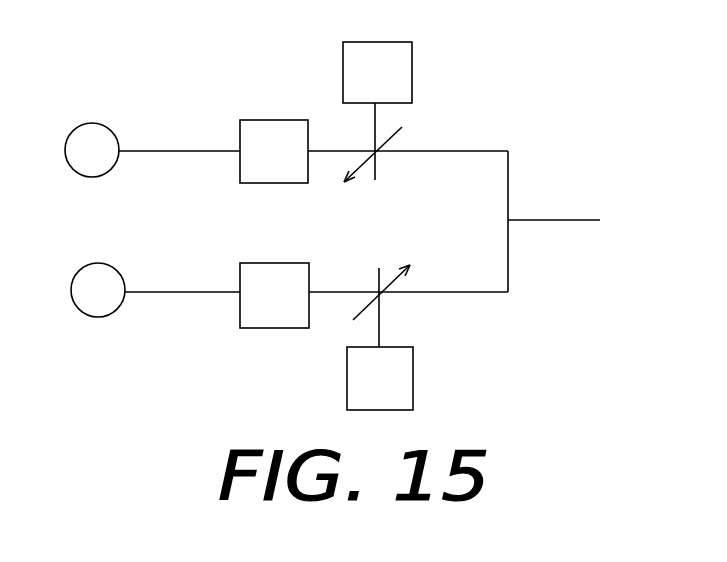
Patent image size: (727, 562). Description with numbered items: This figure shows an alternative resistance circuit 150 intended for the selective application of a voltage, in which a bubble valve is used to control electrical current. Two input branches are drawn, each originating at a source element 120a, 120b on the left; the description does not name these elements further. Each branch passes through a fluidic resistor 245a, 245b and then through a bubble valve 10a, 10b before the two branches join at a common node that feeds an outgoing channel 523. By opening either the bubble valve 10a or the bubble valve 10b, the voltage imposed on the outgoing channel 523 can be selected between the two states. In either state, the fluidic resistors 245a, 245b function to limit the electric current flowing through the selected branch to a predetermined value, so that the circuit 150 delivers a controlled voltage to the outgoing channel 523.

The light source 120b is at (92, 128).
The light source 120a is at (94, 270).
The fluidic resistor 245b is at (274, 151).
The fluidic resistor 245a is at (274, 295).
The bubble valve 10b is at (377, 112).
The bubble valve 10a is at (380, 337).
The resistance circuit 150 is at (521, 110).
The outgoing channel 523 is at (537, 218).